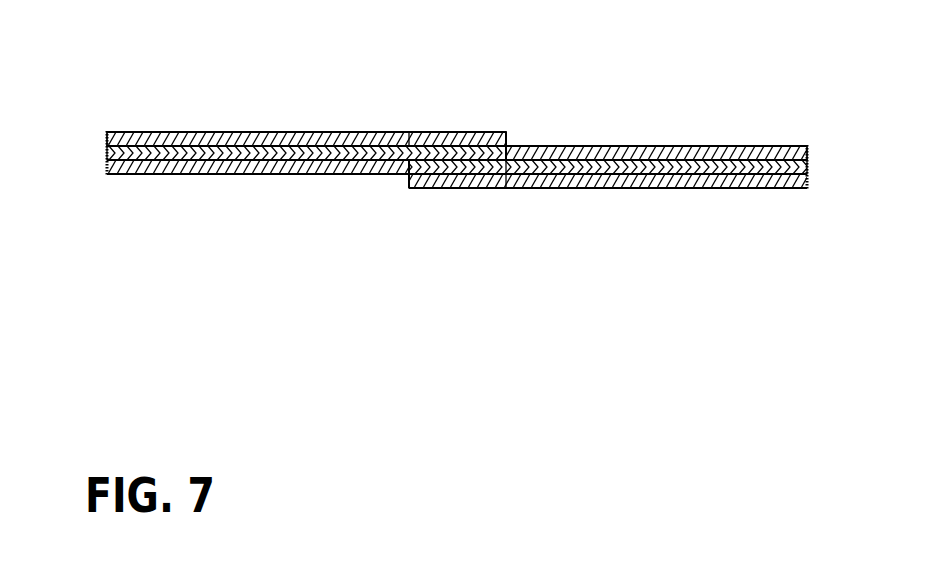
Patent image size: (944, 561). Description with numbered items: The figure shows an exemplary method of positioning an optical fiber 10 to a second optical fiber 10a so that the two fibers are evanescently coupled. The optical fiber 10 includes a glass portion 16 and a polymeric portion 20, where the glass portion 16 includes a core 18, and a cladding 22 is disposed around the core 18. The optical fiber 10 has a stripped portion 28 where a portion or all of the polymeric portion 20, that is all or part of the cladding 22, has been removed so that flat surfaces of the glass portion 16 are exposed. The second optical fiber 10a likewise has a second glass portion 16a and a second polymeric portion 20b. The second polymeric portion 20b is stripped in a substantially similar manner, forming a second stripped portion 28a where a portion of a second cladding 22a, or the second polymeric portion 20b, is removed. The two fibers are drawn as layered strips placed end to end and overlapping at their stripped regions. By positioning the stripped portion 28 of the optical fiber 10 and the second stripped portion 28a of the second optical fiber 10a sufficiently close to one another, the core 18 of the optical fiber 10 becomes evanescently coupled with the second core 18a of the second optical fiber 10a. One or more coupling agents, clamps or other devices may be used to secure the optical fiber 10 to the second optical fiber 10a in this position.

The optical fiber 10 is at (207, 103).
The second optical fiber 10a is at (572, 208).
The glass portion 16 is at (290, 161).
The second glass portion 16a is at (722, 168).
The core 18 is at (115, 153).
The second core 18a is at (792, 168).
The polymeric portion 20 is at (330, 133).
The second polymeric portion 20b is at (644, 145).
The cladding 22 is at (132, 137).
The second cladding 22a is at (808, 156).
The stripped portion 28 is at (438, 142).
The second stripped portion 28a is at (466, 169).